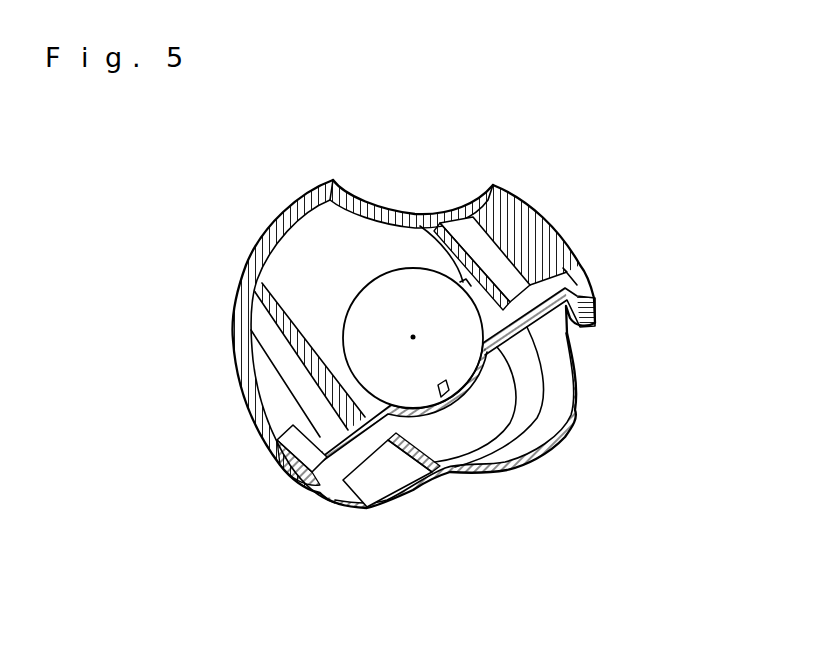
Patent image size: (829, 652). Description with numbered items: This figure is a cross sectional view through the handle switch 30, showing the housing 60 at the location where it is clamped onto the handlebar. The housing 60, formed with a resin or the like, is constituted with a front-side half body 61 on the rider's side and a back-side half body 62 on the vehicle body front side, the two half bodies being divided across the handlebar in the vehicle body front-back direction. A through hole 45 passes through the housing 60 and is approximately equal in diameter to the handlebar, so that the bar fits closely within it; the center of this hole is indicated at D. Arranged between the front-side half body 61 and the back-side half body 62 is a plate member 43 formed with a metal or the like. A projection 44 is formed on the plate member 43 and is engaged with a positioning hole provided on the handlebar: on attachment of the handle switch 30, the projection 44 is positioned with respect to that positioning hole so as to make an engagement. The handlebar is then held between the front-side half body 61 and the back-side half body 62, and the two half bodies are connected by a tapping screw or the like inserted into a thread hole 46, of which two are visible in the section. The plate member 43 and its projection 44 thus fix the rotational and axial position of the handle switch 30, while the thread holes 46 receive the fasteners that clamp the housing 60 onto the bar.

The handle switch 30 is at (503, 85).
The through hole 45 is at (376, 296).
The center axis point D is at (410, 337).
The housing 60 is at (572, 277).
The front-side half body 61 is at (567, 252).
The back-side half body 62 is at (593, 297).
The projection 44 is at (438, 386).
The plate member 43 is at (433, 408).
The thread hole 46 is at (561, 349).